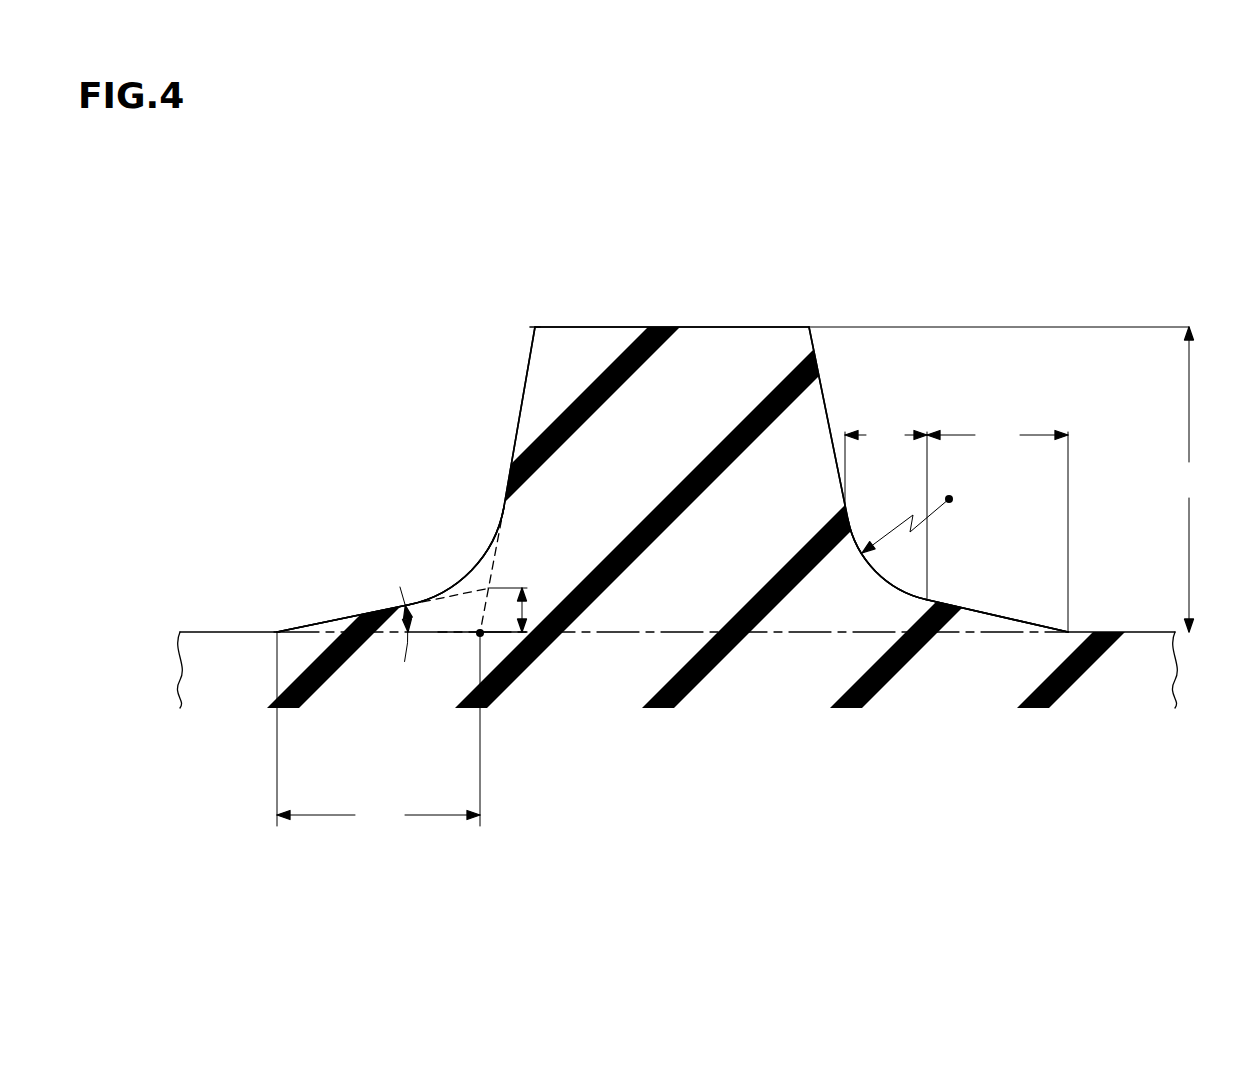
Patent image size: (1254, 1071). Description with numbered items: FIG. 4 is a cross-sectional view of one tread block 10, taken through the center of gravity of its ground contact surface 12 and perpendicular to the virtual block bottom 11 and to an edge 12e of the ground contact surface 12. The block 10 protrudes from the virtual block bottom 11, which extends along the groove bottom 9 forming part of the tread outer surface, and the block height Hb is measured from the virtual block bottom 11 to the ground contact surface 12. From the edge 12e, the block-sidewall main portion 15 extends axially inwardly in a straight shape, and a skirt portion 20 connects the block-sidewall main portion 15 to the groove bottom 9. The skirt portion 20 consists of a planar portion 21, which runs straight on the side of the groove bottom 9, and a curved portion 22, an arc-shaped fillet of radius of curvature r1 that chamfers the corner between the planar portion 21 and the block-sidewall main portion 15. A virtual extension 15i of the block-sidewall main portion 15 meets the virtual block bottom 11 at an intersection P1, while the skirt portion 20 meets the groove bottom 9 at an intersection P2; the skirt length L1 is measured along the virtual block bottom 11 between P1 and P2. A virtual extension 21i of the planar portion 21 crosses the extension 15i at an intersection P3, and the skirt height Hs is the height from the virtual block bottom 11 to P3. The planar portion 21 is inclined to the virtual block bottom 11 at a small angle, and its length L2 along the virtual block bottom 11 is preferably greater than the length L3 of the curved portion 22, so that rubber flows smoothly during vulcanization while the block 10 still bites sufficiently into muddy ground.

The block 10 is at (572, 326).
The ground contact surface 12 is at (753, 326).
The edge of the ground contact surface 12e is at (535, 326).
The block-sidewall main portion 15 is at (521, 397).
The virtual extension of the block-sidewall main portion 15i is at (494, 552).
The skirt portion 20 is at (383, 471).
The planar portion 21 is at (340, 619).
The curved portion 22 is at (477, 564).
The virtual extension of the planar portion 21i is at (478, 590).
The groove bottom 9 is at (208, 631).
The virtual block bottom 11 is at (763, 634).
The intersection between the virtual block bottom and the virtual extension of the b P1 is at (480, 636).
The intersection between the groove bottom and the skirt portion P2 is at (277, 630).
The intersection between the virtual extensions of the planar portion and the block- P3 is at (490, 590).
The skirt height Hs is at (526, 612).
The skirt length L1 is at (378, 730).
The length of the planar portion L2 is at (997, 527).
The length of the curved portion L3 is at (886, 511).
The block height Hb is at (1007, 479).
The radius of curvature of the curved portion r1 is at (907, 523).